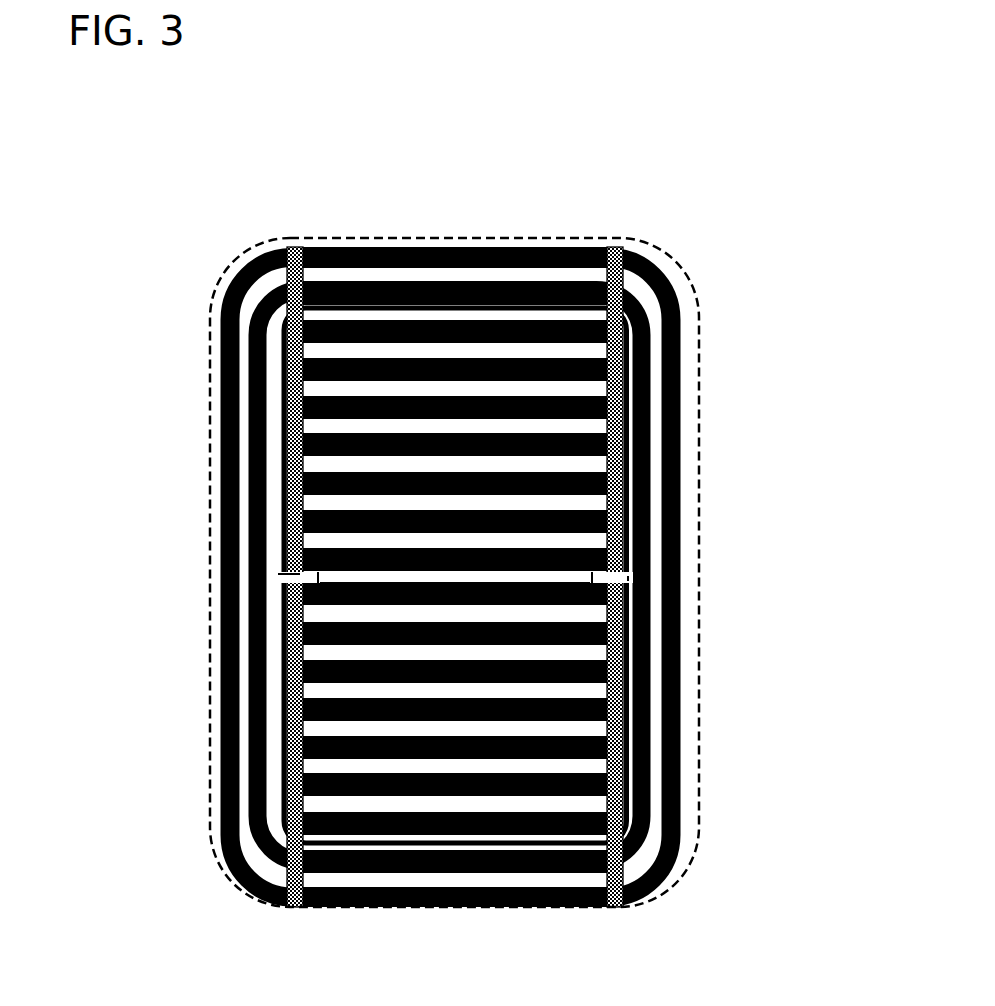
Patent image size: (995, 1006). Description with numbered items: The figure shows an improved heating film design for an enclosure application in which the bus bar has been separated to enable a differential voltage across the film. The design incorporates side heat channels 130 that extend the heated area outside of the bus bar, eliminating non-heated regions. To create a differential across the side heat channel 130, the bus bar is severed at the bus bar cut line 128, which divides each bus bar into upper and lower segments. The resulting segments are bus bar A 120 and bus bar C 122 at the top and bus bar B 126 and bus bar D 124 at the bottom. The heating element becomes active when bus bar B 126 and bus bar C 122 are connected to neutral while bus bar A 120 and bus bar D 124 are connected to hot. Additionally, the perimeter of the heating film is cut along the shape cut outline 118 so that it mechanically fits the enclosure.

The shape cut outline 118 is at (396, 238).
The bus bar A 120 is at (662, 262).
The bus bar C 122 is at (268, 300).
The bus bar D 124 is at (287, 697).
The bus bar B 126 is at (620, 718).
The bus bar cut line 128 is at (740, 548).
The side heat channel 130 is at (221, 787).